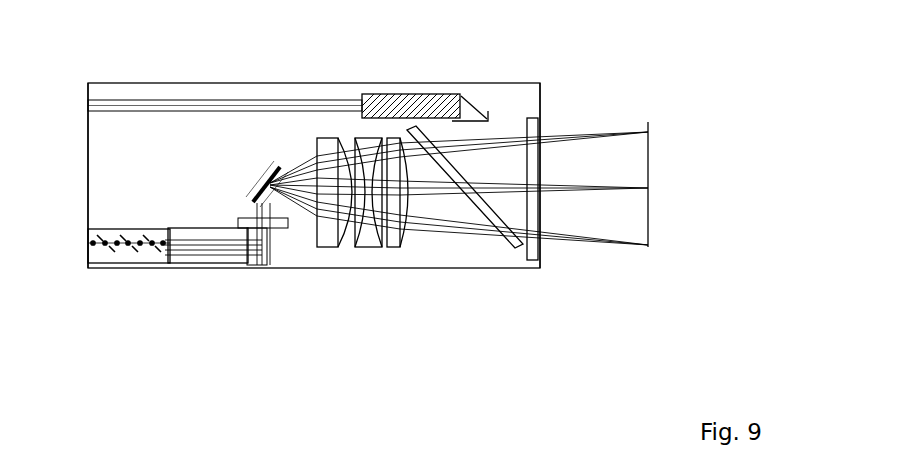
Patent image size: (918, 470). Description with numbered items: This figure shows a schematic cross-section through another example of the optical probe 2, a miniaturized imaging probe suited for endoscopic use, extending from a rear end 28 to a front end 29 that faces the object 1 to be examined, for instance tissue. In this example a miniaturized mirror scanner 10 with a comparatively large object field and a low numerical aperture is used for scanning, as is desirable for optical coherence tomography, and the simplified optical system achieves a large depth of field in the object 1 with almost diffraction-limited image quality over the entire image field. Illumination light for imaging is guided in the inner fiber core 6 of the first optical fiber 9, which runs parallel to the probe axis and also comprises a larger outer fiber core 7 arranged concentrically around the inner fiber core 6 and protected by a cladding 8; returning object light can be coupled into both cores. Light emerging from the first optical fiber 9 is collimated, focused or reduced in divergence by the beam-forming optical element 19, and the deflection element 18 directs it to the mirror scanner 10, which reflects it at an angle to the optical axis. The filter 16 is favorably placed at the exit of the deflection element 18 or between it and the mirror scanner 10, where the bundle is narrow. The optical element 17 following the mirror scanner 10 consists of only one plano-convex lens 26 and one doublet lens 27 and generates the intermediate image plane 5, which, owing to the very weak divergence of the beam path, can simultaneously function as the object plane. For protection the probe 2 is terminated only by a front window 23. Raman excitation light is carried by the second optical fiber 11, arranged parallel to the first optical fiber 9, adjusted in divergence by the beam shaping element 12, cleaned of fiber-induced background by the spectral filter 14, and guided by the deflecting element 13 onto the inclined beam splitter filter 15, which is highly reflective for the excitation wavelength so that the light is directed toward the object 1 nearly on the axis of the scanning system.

The object 1 is at (654, 244).
The optical probe 2 is at (541, 83).
The intermediate image plane 5 is at (648, 247).
The inner fiber core 6 is at (112, 270).
The outer fiber core 7 is at (132, 270).
The cladding 8 is at (150, 270).
The first optical fiber 9 is at (129, 317).
The mirror scanner 10 is at (256, 174).
The second optical fiber 11 is at (265, 99).
The beam shaping element 12 is at (398, 94).
The deflecting element 13 is at (485, 118).
The spectral filter 14 is at (492, 119).
The beam splitter filter 15 is at (472, 210).
The filter 16 is at (288, 227).
The optical element 17 is at (355, 277).
The deflection element 18 is at (263, 268).
The beam-forming optical element 19 is at (227, 268).
The front window 23 is at (528, 262).
The plano-convex lens 26 is at (335, 248).
The doublet lens 27 is at (380, 248).
The rear end 28 is at (88, 133).
The front end 29 is at (540, 105).